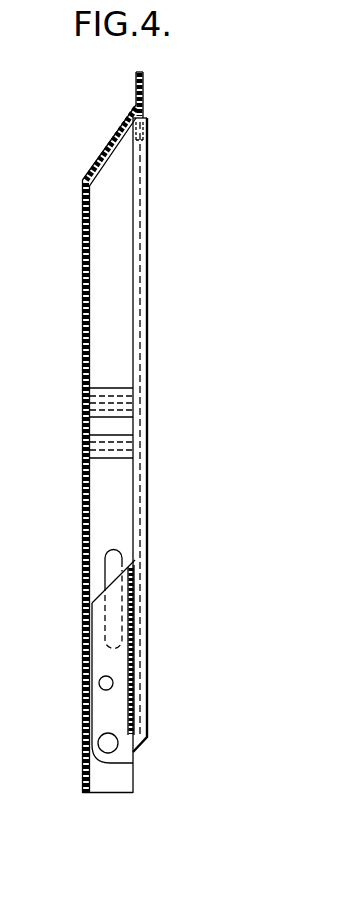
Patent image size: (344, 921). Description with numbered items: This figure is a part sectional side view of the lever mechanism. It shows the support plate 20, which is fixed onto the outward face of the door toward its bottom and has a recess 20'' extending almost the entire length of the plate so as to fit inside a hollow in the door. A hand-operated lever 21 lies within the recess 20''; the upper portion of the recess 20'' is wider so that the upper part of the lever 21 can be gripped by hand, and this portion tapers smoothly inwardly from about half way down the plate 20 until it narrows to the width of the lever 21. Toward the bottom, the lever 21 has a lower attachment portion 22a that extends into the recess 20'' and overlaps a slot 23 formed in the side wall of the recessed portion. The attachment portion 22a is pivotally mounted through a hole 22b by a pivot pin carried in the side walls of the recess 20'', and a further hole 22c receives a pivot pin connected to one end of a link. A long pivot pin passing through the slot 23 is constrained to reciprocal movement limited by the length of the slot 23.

The support plate 20 is at (140, 432).
The recess 20'' is at (144, 397).
The hand-operated lever 21 is at (142, 498).
The slot 23 is at (115, 563).
The lower attachment portion 22a is at (108, 718).
The hole 22b is at (110, 745).
The hole 22c is at (113, 683).